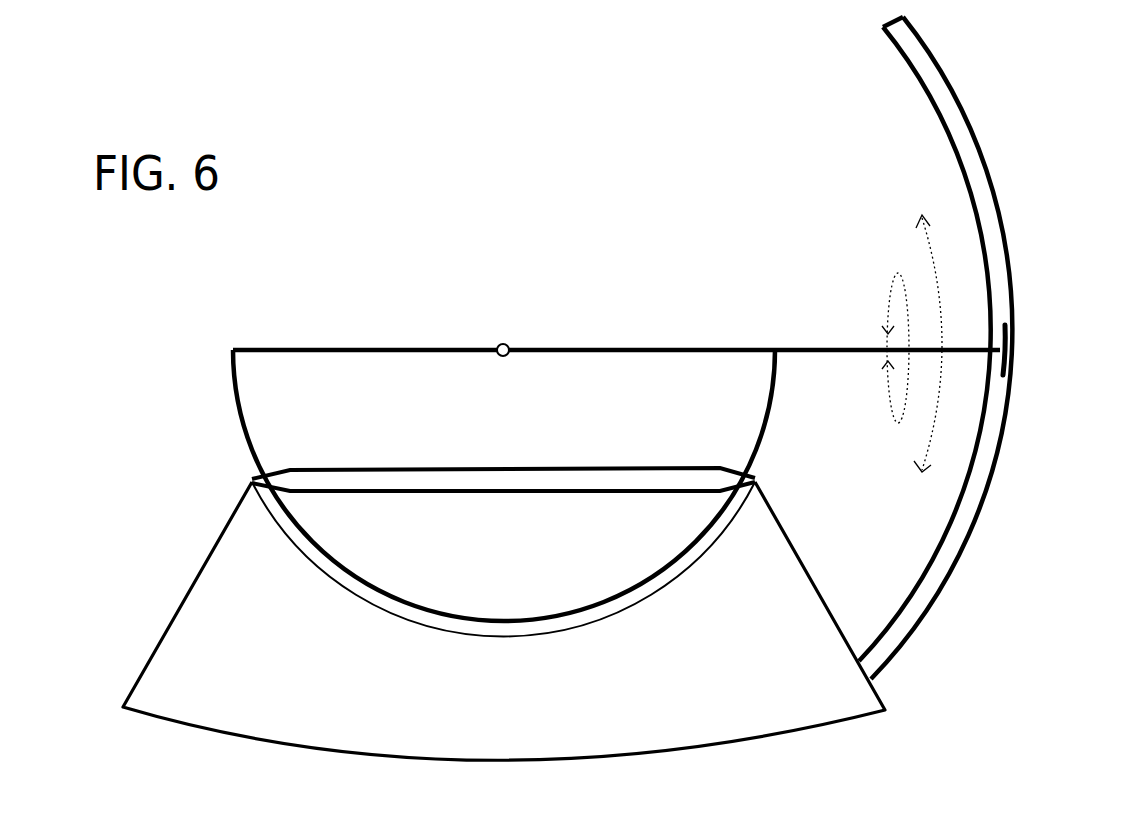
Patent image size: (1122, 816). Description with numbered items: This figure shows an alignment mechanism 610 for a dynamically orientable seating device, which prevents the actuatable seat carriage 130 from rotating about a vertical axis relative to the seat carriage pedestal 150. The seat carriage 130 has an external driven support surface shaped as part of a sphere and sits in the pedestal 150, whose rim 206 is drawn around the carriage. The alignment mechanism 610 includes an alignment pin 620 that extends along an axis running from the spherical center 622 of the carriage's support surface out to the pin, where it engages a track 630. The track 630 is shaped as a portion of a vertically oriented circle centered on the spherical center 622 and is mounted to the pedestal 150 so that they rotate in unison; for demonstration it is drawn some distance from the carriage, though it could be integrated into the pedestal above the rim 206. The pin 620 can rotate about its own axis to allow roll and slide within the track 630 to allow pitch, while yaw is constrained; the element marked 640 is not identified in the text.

The actuatable seat carriage 130 is at (220, 387).
The seat carriage pedestal 150 is at (201, 555).
The rim 206 is at (250, 476).
The alignment mechanism 610 is at (1027, 253).
The alignment pin 620 is at (841, 347).
The spherical center 622 is at (495, 338).
The track 630 is at (952, 88).
The stop 640 is at (1013, 330).